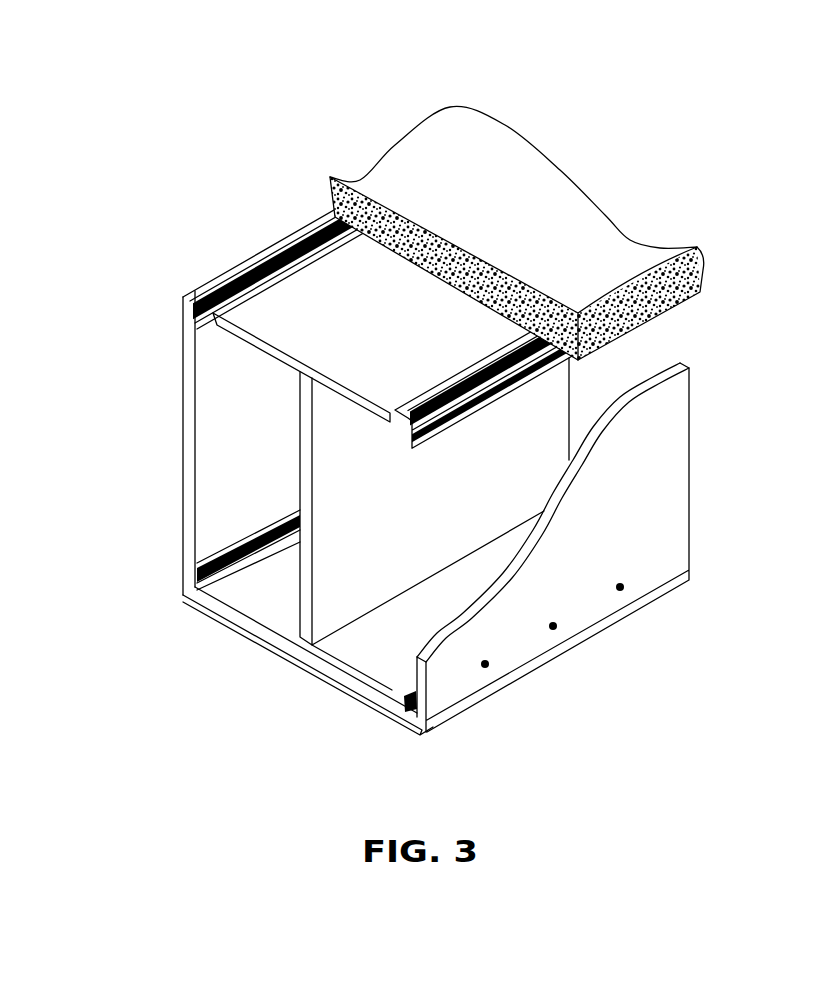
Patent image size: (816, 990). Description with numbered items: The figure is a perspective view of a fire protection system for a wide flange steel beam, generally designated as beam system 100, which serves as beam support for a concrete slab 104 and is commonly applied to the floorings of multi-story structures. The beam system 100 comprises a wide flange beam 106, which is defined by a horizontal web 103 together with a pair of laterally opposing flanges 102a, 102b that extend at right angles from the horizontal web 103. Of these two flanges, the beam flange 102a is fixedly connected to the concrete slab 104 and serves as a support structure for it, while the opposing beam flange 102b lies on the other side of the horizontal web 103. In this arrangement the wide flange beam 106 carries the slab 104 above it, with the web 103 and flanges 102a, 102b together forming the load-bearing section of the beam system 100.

The fire protection system for wide flange steel beam 100 is at (532, 102).
The beam flange 102a is at (253, 352).
The beam flange 102b is at (287, 636).
The horizontal web 103 is at (298, 458).
The concrete slab 104 is at (632, 237).
The wide flange beam 106 is at (572, 397).